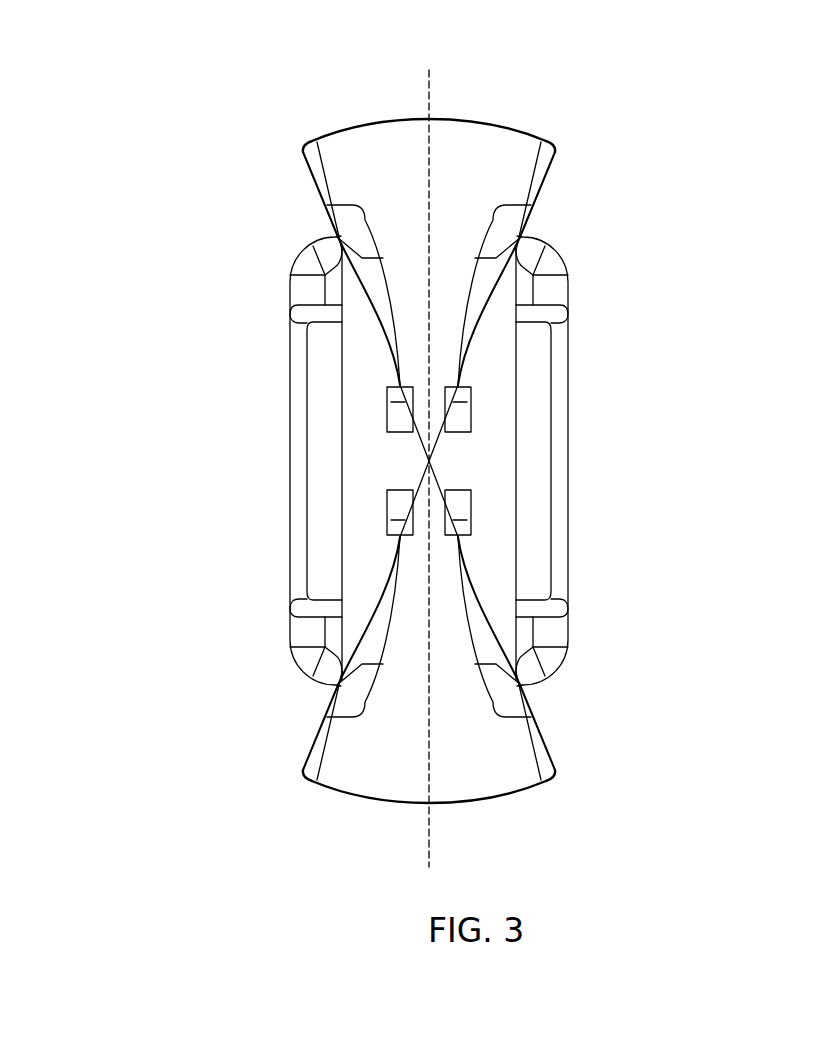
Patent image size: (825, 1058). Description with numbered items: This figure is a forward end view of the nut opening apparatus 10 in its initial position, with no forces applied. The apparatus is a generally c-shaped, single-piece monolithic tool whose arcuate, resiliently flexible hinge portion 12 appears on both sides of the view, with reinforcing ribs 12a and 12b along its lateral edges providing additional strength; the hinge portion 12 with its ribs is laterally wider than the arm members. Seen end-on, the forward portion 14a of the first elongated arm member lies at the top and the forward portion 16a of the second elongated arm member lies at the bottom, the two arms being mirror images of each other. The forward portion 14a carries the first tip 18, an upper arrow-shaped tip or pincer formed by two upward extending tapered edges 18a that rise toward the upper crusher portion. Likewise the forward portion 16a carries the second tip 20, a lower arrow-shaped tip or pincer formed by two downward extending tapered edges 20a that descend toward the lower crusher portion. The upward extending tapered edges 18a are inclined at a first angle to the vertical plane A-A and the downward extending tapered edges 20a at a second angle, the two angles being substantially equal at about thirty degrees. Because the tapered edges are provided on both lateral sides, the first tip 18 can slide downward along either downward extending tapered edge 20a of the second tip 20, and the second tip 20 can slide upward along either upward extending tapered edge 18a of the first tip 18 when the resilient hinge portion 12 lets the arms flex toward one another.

The nut opening apparatus 10 is at (688, 221).
The hinge portion 12 is at (493, 507).
The reinforcing rib 12a is at (533, 572).
The reinforcing rib 12b is at (323, 583).
The forward portion 14a is at (392, 142).
The forward portion 16a is at (392, 787).
The first tip 18 is at (423, 424).
The upward extending tapered edge 18a is at (423, 445).
The second tip 20 is at (423, 501).
The downward extending tapered edge 20a is at (417, 480).